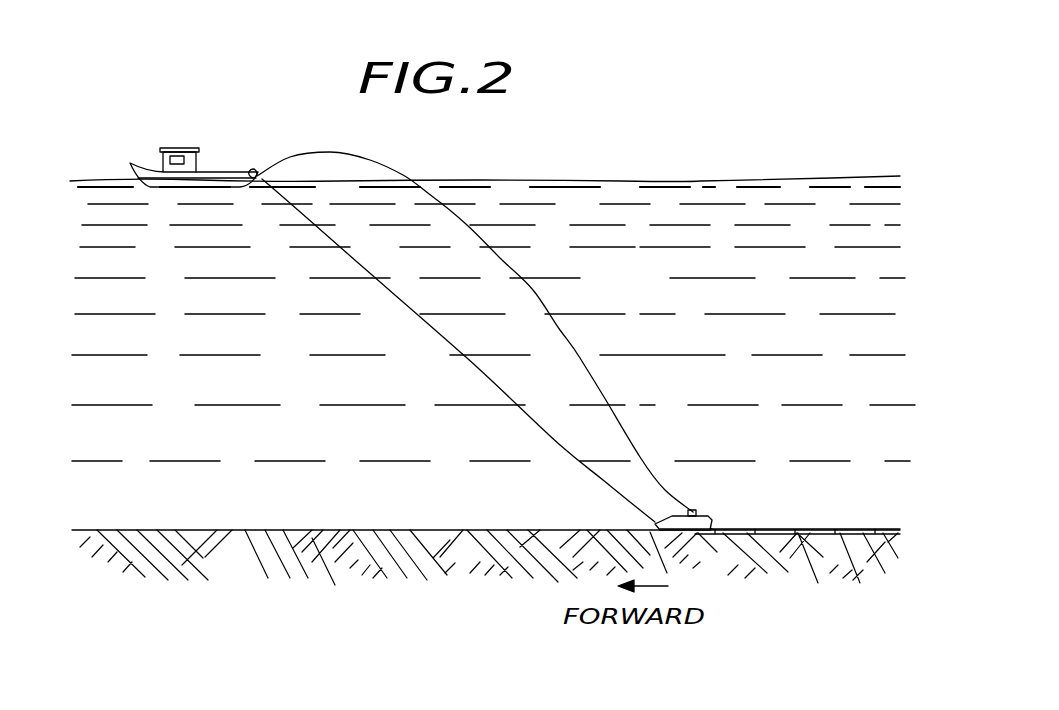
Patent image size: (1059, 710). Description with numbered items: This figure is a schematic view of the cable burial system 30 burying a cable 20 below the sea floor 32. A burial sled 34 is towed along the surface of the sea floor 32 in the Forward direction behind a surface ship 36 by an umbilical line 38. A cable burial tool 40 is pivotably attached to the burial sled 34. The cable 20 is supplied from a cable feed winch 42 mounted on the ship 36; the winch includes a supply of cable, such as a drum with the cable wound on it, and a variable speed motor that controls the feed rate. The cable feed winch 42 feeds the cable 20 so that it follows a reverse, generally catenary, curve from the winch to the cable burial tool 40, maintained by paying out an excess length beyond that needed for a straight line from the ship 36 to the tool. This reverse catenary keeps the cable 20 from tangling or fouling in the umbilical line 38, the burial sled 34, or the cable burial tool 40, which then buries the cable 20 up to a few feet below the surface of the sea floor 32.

The cable 20 is at (540, 298).
The cable burial system 30 is at (575, 269).
The sea floor 32 is at (347, 527).
The burial sled 34 is at (652, 523).
The surface ship 36 is at (135, 167).
The umbilical line 38 is at (424, 320).
The cable burial tool 40 is at (694, 512).
The cable feed winch 42 is at (248, 171).